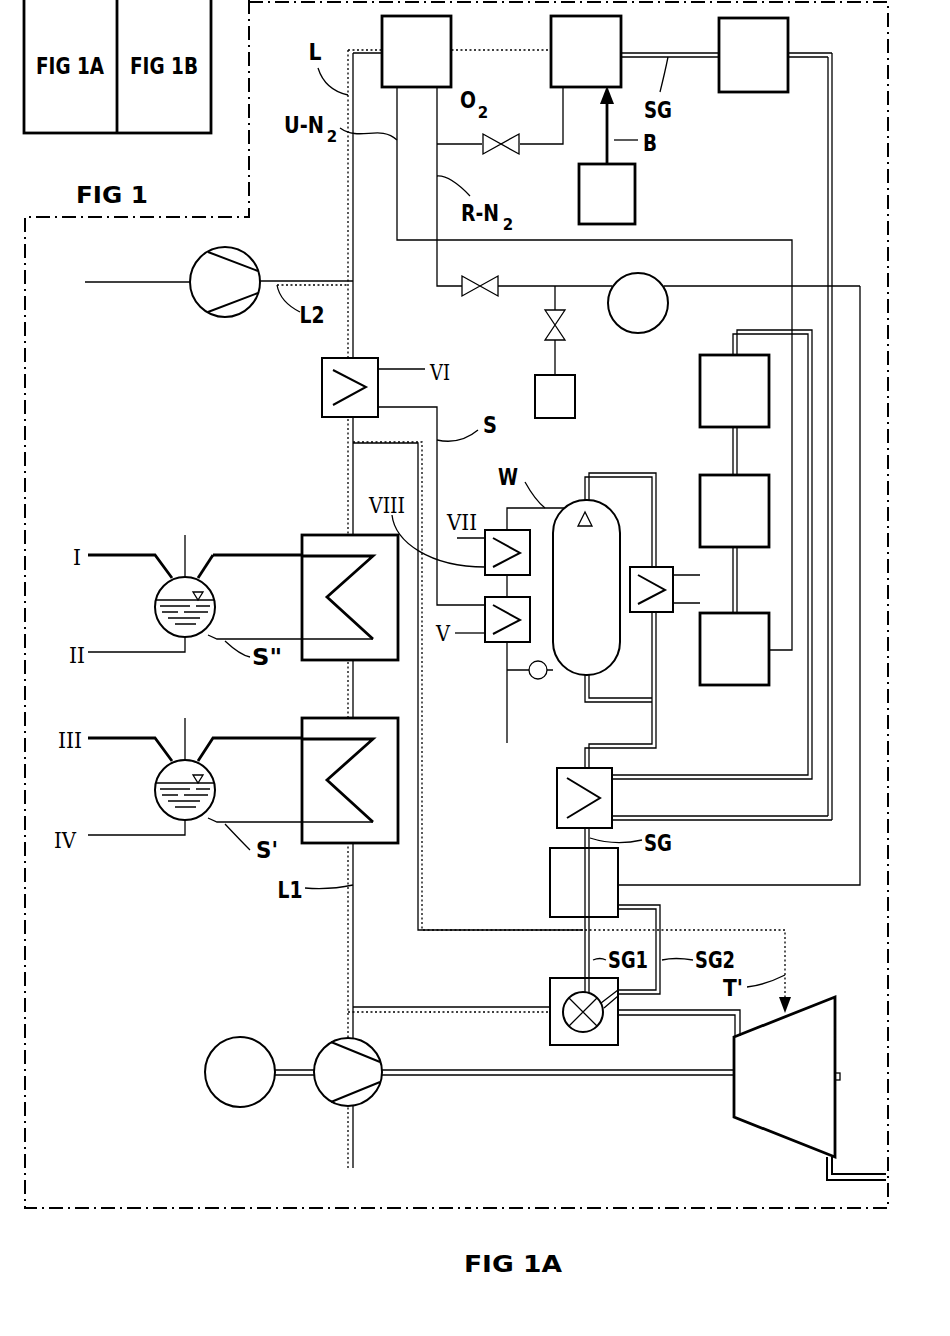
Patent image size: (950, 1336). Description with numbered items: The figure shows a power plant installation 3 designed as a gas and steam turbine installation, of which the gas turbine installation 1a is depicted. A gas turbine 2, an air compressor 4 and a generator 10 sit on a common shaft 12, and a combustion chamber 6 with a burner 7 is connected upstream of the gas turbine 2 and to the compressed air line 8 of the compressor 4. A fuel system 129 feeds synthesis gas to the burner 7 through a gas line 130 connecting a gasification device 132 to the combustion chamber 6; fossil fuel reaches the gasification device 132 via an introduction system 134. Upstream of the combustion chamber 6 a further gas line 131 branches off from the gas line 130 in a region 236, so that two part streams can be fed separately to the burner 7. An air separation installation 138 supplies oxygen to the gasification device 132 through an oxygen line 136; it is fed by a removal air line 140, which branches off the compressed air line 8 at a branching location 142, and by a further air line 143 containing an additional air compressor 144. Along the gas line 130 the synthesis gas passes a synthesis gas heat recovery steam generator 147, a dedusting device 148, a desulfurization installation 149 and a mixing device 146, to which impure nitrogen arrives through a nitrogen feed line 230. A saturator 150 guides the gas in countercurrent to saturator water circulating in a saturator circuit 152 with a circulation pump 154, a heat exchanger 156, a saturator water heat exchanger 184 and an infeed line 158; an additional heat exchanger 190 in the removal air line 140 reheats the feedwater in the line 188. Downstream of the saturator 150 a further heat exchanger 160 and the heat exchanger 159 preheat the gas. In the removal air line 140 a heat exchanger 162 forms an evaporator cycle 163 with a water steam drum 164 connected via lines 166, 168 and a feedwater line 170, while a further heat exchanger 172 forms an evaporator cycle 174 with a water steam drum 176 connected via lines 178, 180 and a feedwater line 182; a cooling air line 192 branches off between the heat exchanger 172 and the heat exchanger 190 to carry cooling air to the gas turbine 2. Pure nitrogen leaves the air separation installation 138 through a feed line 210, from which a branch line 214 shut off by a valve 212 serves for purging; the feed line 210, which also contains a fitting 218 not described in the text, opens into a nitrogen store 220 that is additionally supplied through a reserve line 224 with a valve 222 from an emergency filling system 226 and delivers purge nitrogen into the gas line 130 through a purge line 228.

The gas turbine 2 is at (770, 1130).
The power plant installation 3 is at (103, 1260).
The air compressor 4 is at (365, 1098).
The combustion chamber 6 is at (618, 1027).
The burner 7 is at (550, 1022).
The compressed air line 8 is at (353, 1022).
The generator 10 is at (258, 1045).
The common shaft 12 is at (293, 1076).
The fuel system 129 is at (636, 457).
The gas line 130 is at (828, 152).
The further gas line 131 is at (660, 912).
The gasification device 132 is at (606, 66).
The introduction system 134 is at (635, 180).
The oxygen line 136 is at (478, 50).
The air separation installation 138 is at (436, 66).
The removal air line 140 is at (353, 312).
The branching location 142 is at (353, 1007).
The further air line 143 is at (300, 281).
The additional air compressor 144 is at (196, 266).
The mixing device 146 is at (716, 664).
The synthesis gas heat recovery steam generator 147 is at (773, 69).
The dedusting device 148 is at (716, 406).
The desulfurization installation 149 is at (716, 526).
The saturator 150 is at (576, 500).
The saturator circuit 152 is at (507, 587).
The circulation pump 154 is at (540, 682).
The heat exchanger 156 is at (490, 530).
The infeed line 158 is at (508, 725).
The heat exchanger 159 is at (557, 795).
The further heat exchanger 160 is at (660, 567).
The heat exchanger 162 is at (330, 718).
The evaporator cycle 163 is at (275, 745).
The water steam drum 164 is at (193, 762).
The line 166 is at (135, 738).
The line 168 is at (143, 835).
The feedwater line 170 is at (185, 728).
The further heat exchanger 172 is at (322, 535).
The evaporator cycle 174 is at (275, 560).
The water steam drum 176 is at (195, 577).
The line 178 is at (140, 555).
The line 180 is at (143, 652).
The feedwater line 182 is at (185, 545).
The saturator water heat exchanger 184 is at (498, 645).
The line 188 is at (400, 369).
The additional heat exchanger 190 is at (322, 396).
The cooling air line 192 is at (785, 975).
The feed line 210 is at (560, 286).
The valve 212 is at (505, 154).
The branch line 214 is at (563, 128).
The valve 218 is at (480, 297).
The nitrogen store 220 is at (641, 333).
The valve 222 is at (566, 333).
The reserve line 224 is at (555, 357).
The emergency filling system 226 is at (578, 400).
The purge line 228 is at (855, 286).
The nitrogen feed line 230 is at (718, 240).
The region 236 is at (550, 878).
The gas turbine installation 1a is at (632, 1275).